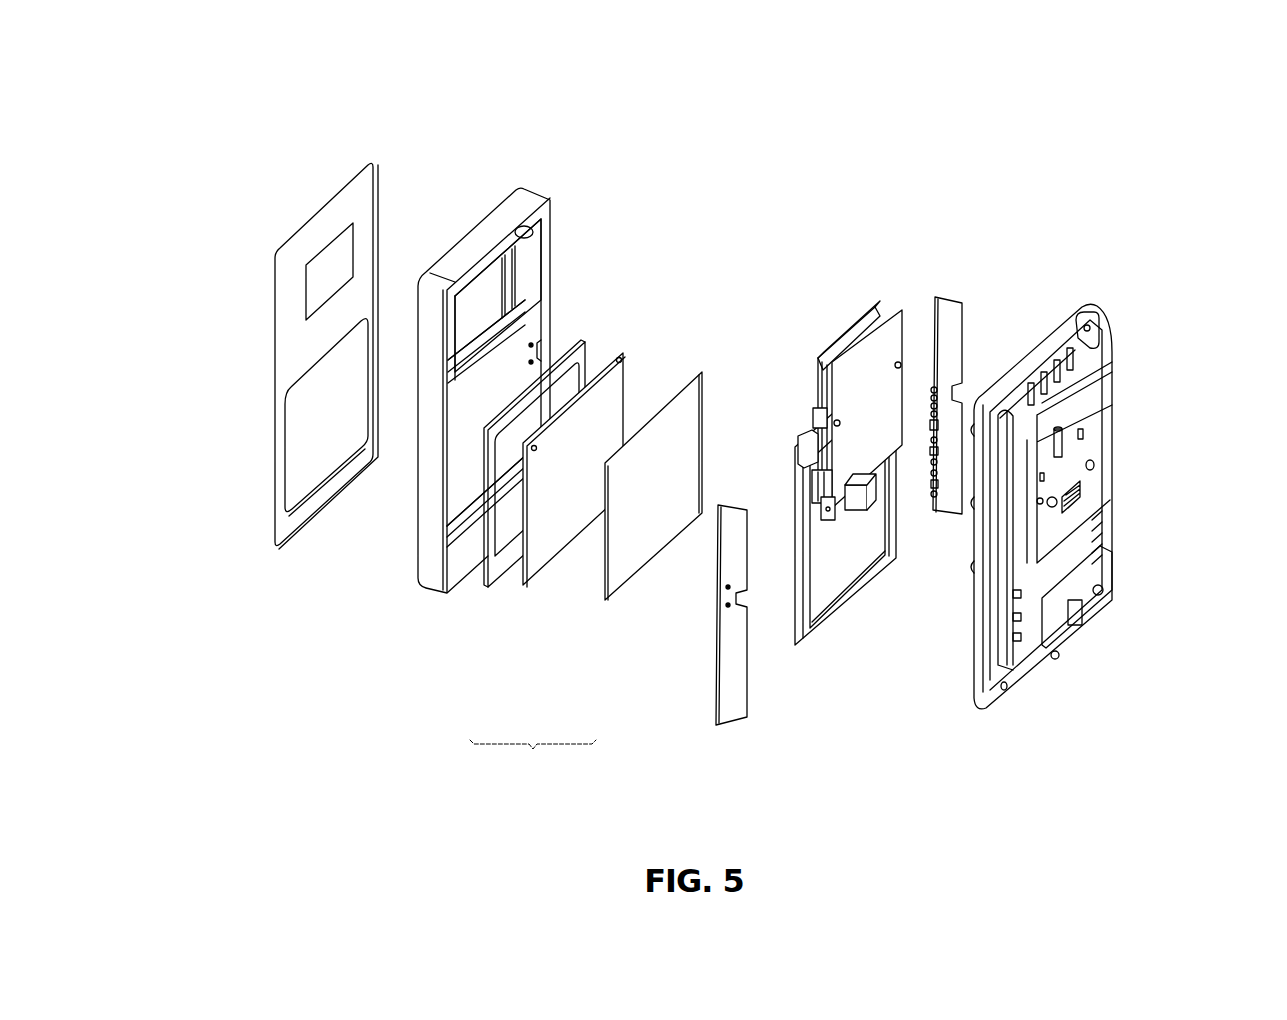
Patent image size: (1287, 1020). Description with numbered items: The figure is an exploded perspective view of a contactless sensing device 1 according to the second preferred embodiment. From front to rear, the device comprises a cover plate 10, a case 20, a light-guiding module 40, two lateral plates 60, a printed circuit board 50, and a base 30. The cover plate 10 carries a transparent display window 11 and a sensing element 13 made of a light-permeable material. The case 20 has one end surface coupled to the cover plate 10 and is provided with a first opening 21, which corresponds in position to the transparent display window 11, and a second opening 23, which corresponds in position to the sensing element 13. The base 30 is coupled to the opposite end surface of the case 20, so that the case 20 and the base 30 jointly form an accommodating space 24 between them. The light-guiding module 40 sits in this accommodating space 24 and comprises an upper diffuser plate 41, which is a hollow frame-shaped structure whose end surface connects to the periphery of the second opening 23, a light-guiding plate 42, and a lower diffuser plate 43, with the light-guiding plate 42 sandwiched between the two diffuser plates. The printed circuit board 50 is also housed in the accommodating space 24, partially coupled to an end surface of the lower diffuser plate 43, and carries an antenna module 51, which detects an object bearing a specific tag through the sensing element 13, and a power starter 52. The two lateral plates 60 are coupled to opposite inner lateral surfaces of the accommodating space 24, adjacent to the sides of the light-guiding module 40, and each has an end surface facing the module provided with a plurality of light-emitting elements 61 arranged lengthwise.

The contactless sensing device 1 is at (1145, 135).
The cover plate 10 is at (355, 177).
The transparent display window 11 is at (330, 272).
The sensing element 13 is at (315, 436).
The case 20 is at (462, 260).
The first opening 21 is at (487, 293).
The second opening 23 is at (462, 448).
The accommodating space 24 is at (462, 495).
The light-guiding module 40 is at (533, 762).
The upper diffuser plate 41 is at (503, 573).
The light-guiding plate 42 is at (568, 553).
The lower diffuser plate 43 is at (657, 562).
The printed circuit board 50 is at (822, 578).
The antenna module 51 is at (803, 642).
The power starter 52 is at (855, 497).
The lateral plates 60 is at (730, 726).
The light-emitting elements 61 is at (937, 518).
The base 30 is at (990, 703).